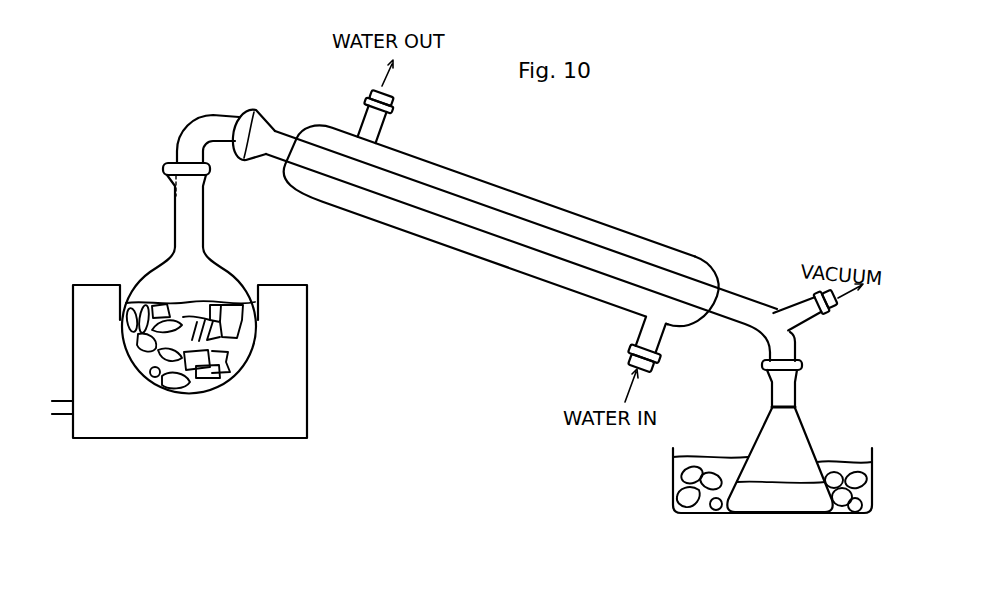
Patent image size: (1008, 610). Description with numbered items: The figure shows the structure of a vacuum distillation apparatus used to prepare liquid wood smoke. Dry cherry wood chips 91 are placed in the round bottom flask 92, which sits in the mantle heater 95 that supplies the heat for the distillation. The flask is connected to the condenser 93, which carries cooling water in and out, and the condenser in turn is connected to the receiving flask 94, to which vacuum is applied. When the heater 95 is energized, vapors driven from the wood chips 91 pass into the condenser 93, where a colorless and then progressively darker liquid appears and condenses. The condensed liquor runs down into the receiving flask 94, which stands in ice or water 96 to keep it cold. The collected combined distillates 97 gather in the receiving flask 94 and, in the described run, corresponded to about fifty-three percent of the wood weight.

The dry cherry wood chips 91 is at (232, 332).
The round bottom flask 92 is at (226, 272).
The condenser 93 is at (590, 218).
The receiving flask 94 is at (805, 428).
The mantle heater 95 is at (292, 359).
The ice or water 96 is at (675, 485).
The combined distillates 97 is at (777, 514).